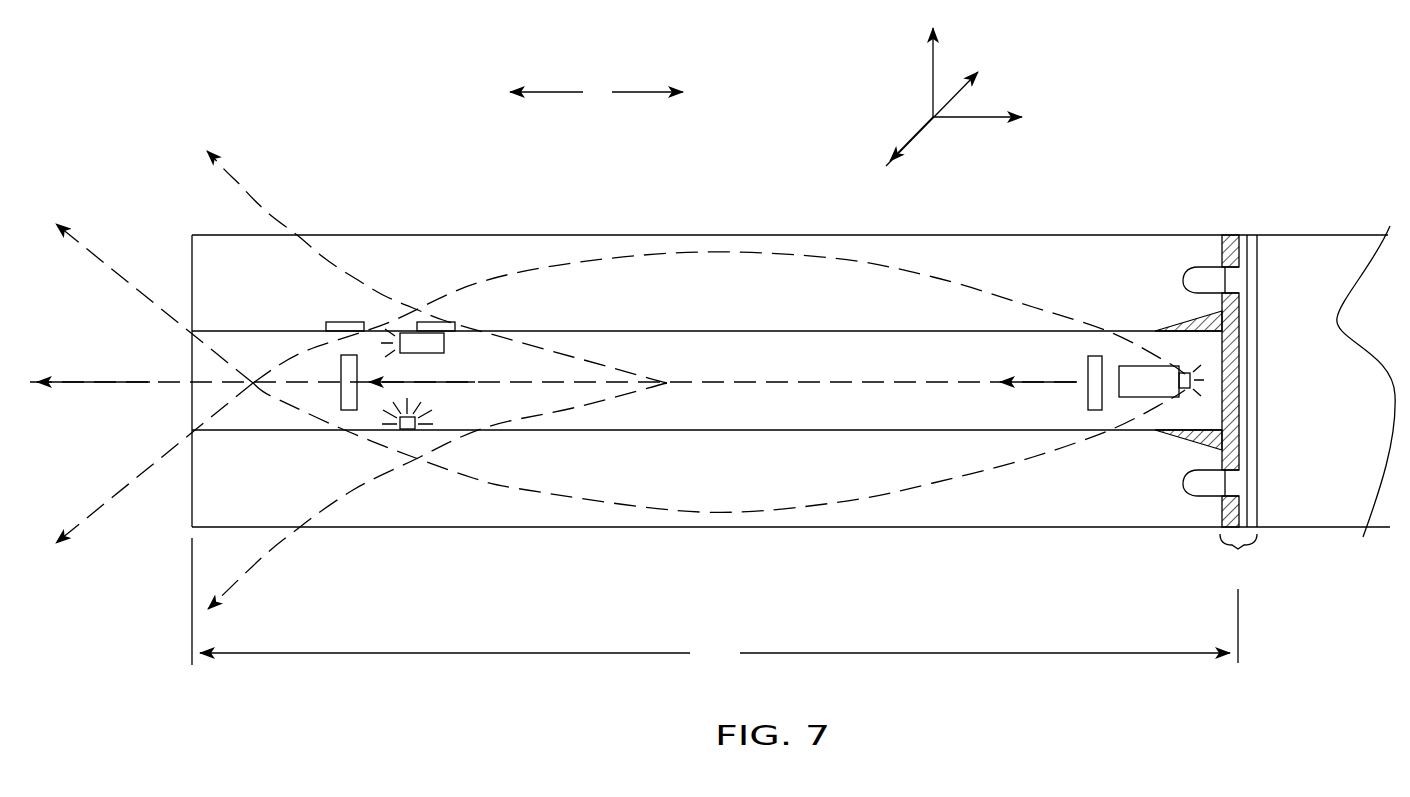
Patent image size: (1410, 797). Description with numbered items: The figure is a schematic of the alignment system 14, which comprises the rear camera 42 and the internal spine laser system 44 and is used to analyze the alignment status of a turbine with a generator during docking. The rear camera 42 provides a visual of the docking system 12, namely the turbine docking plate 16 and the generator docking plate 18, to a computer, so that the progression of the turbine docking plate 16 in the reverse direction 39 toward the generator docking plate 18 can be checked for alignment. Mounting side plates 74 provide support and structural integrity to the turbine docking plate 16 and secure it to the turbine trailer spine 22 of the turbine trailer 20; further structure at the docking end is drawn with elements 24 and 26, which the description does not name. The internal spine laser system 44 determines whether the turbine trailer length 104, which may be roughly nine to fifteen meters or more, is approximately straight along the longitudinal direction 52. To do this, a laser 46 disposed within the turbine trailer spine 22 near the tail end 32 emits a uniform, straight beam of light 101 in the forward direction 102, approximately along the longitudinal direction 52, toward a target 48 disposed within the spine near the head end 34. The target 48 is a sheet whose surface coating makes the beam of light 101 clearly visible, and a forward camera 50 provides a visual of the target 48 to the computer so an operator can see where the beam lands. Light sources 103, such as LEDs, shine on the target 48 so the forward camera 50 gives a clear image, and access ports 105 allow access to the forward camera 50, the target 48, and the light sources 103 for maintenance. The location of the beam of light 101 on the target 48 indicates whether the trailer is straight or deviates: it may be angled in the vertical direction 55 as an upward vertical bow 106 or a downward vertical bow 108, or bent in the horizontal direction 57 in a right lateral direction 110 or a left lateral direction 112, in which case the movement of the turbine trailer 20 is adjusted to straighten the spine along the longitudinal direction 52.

The docking system 12 is at (1238, 558).
The alignment system 14 is at (1080, 285).
The turbine docking plate 16 is at (1229, 235).
The generator docking plate 18 is at (1248, 245).
The turbine trailer 20 is at (1095, 248).
The turbine trailer spine 22 is at (910, 340).
The fastener 24 is at (1205, 278).
The mounting surface 26 is at (1318, 245).
The tail end 32 is at (1242, 98).
The head end 34 is at (275, 140).
The reverse direction 39 is at (648, 94).
The rear camera 42 is at (1143, 372).
The internal spine laser system 44 is at (694, 318).
The laser 46 is at (1090, 376).
The target 48 is at (340, 372).
The forward camera 50 is at (427, 352).
The longitudinal direction 52 is at (145, 388).
The vertical direction 55 is at (932, 72).
The horizontal direction 57 is at (955, 95).
The mounting side plate 74 is at (1180, 318).
The beam of light 101 is at (428, 384).
The forward direction 102 is at (547, 94).
The light source 103 is at (405, 432).
The turbine trailer length 104 is at (715, 603).
The access port 105 is at (345, 320).
The upward vertical bow 106 is at (110, 272).
The downward vertical bow 108 is at (110, 492).
The right lateral direction 110 is at (270, 208).
The left lateral direction 112 is at (270, 556).